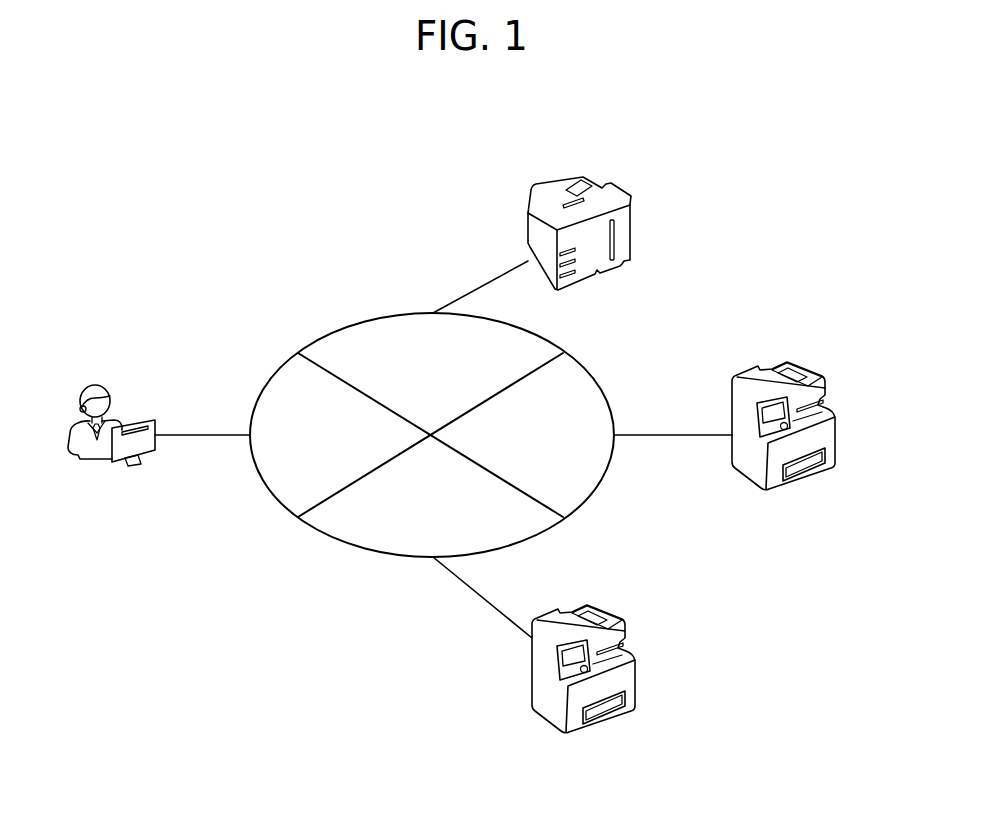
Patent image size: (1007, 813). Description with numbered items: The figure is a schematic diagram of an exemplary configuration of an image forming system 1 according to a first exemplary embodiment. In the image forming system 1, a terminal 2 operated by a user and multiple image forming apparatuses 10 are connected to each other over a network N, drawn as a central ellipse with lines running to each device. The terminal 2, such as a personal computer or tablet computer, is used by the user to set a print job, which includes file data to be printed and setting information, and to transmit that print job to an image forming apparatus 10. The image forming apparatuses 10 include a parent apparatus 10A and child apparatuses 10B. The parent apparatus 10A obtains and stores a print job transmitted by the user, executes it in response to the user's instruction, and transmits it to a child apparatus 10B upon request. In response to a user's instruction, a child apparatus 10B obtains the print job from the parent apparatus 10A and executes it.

The image forming system 1 is at (301, 239).
The network N is at (555, 343).
The terminal 2 is at (145, 423).
The image forming apparatuses 10 is at (715, 437).
The parent apparatus 10A is at (610, 182).
The child apparatuses 10B is at (807, 364).